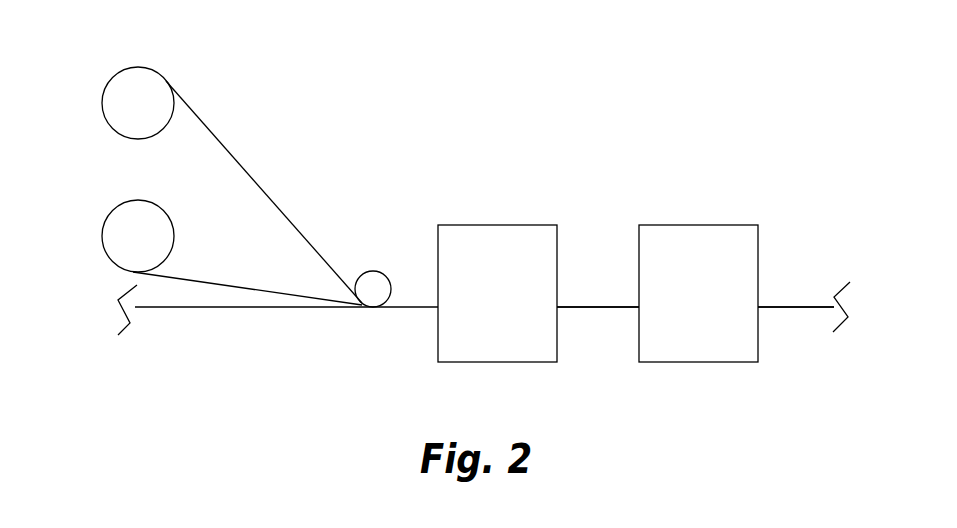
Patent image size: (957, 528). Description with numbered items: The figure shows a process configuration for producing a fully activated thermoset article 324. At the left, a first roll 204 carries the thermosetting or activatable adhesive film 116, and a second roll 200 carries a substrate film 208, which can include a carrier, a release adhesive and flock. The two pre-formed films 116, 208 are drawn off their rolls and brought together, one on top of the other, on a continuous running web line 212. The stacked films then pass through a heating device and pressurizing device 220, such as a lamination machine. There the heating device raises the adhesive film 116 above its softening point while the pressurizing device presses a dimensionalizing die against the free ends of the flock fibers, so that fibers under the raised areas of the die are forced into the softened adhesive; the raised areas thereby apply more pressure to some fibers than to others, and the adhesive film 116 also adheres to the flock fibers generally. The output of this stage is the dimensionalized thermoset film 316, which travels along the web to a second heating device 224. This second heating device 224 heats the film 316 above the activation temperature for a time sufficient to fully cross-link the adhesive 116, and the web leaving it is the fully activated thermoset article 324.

The adhesive film 116 is at (195, 277).
The second roll 200 is at (102, 97).
The first roll 204 is at (102, 251).
The substrate film 208 is at (275, 200).
The continuous running web line 212 is at (281, 308).
The heating device and pressurizing device 220 is at (508, 225).
The second heating device 224 is at (687, 225).
The dimensionalized thermoset film 316 is at (620, 308).
The fully activated thermoset article 324 is at (798, 308).